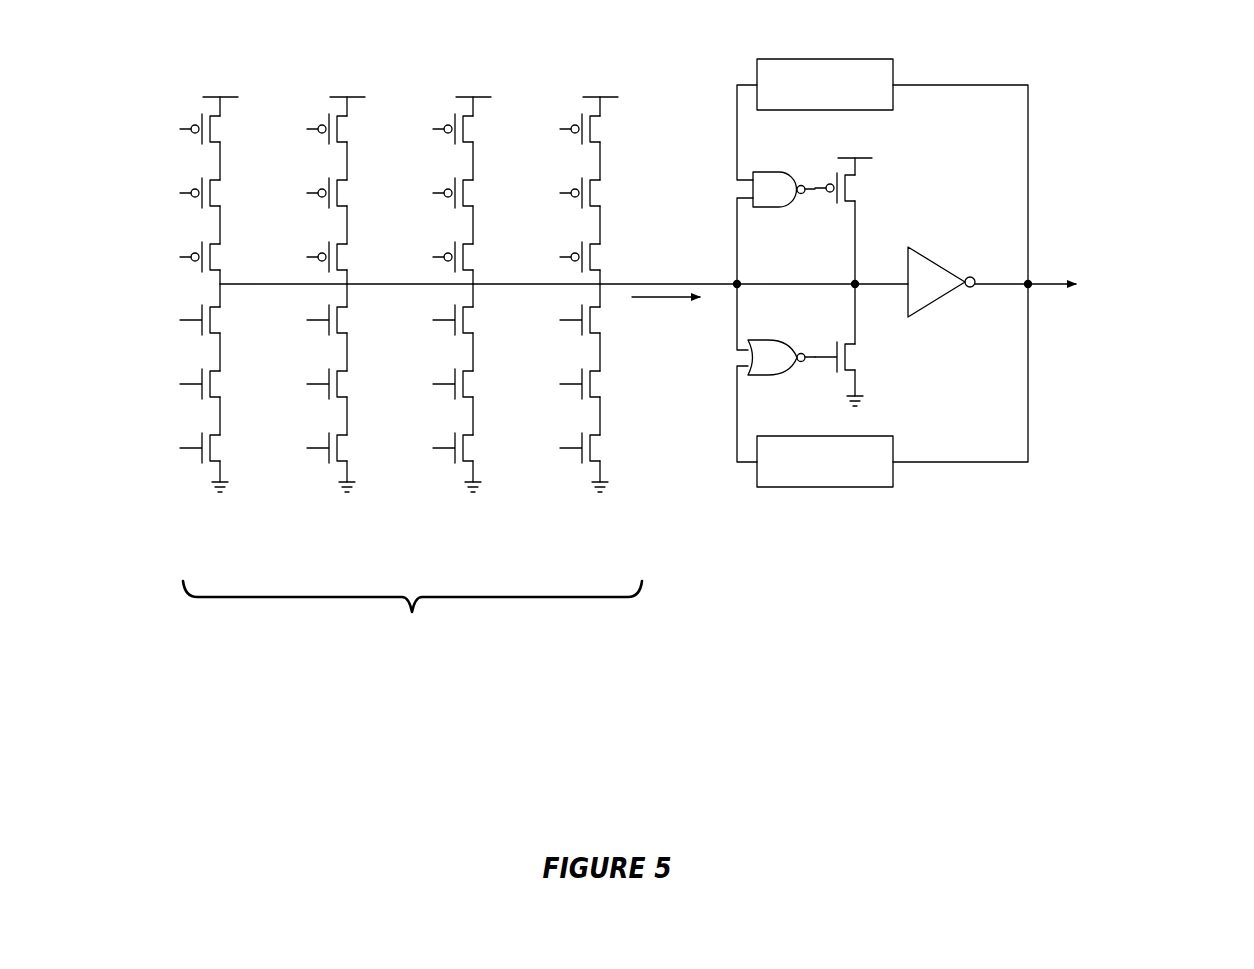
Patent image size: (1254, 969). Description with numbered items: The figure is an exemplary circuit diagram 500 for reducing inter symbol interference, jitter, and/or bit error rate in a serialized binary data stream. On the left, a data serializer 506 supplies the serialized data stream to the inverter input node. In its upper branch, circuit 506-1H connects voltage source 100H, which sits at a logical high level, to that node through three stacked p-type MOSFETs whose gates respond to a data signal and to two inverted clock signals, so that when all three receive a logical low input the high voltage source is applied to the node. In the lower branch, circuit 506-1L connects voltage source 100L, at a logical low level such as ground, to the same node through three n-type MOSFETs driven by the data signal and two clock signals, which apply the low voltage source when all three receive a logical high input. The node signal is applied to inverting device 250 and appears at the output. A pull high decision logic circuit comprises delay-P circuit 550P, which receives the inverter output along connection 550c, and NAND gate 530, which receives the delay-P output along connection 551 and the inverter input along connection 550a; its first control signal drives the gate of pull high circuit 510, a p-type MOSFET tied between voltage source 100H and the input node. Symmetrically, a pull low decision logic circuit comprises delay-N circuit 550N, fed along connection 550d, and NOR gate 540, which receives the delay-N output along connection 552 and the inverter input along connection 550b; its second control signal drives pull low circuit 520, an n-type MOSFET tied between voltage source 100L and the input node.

The circuit diagram 500 is at (1108, 631).
The data serializer 506 is at (412, 624).
The circuit 506-1H is at (370, 157).
The circuit 506-1L is at (374, 423).
The voltage source 100H is at (537, 113).
The voltage source 100L is at (538, 460).
The delay-P circuit 550P is at (825, 72).
The delay-N circuit 550N is at (825, 476).
The connection 551 is at (726, 132).
The connection 552 is at (726, 414).
The connection 550a is at (721, 241).
The connection 550b is at (719, 317).
The connection 550c is at (983, 184).
The connection 550d is at (984, 373).
The NAND gate 530 is at (784, 176).
The NOR gate 540 is at (781, 374).
The pull high circuit 510 is at (859, 221).
The pull low circuit 520 is at (859, 340).
The inverting device 250 is at (1031, 267).